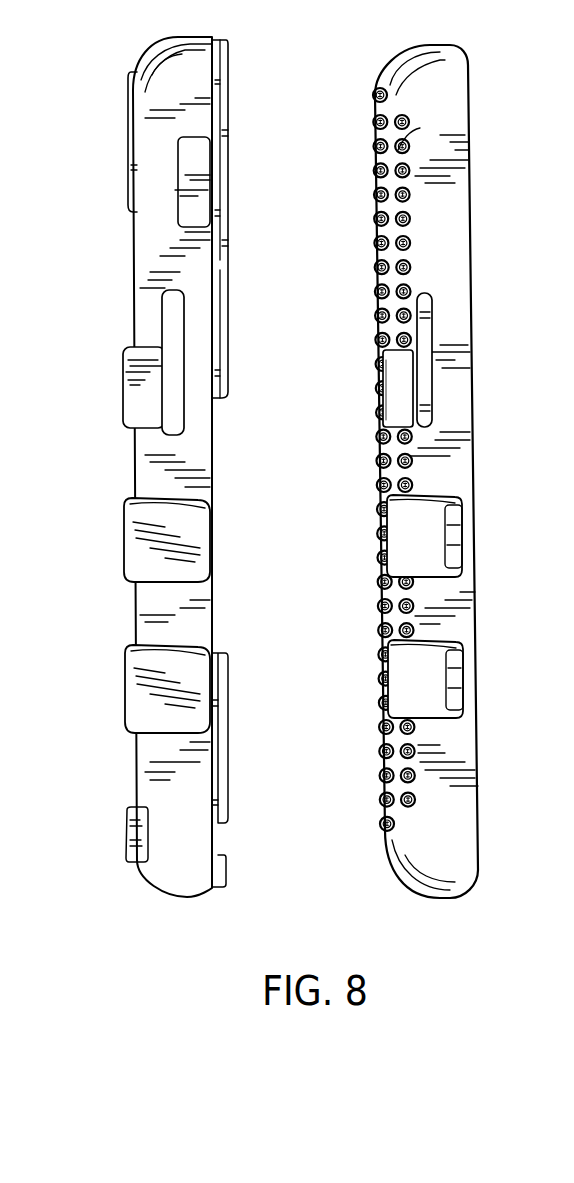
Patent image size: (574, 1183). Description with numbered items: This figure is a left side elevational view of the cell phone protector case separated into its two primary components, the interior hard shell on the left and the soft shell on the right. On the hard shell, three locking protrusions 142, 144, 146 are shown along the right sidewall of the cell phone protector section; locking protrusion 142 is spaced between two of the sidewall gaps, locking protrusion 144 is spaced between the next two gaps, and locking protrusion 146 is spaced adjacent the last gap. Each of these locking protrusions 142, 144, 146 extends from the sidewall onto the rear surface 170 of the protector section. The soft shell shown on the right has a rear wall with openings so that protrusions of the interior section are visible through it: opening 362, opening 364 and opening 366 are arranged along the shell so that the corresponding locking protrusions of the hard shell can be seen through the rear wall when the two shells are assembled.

The locking protrusion 142 is at (123, 387).
The locking protrusion 144 is at (124, 540).
The locking protrusion 146 is at (126, 684).
The rear surface 170 is at (376, 305).
The opening 362 is at (398, 386).
The opening 364 is at (410, 531).
The opening 366 is at (410, 671).